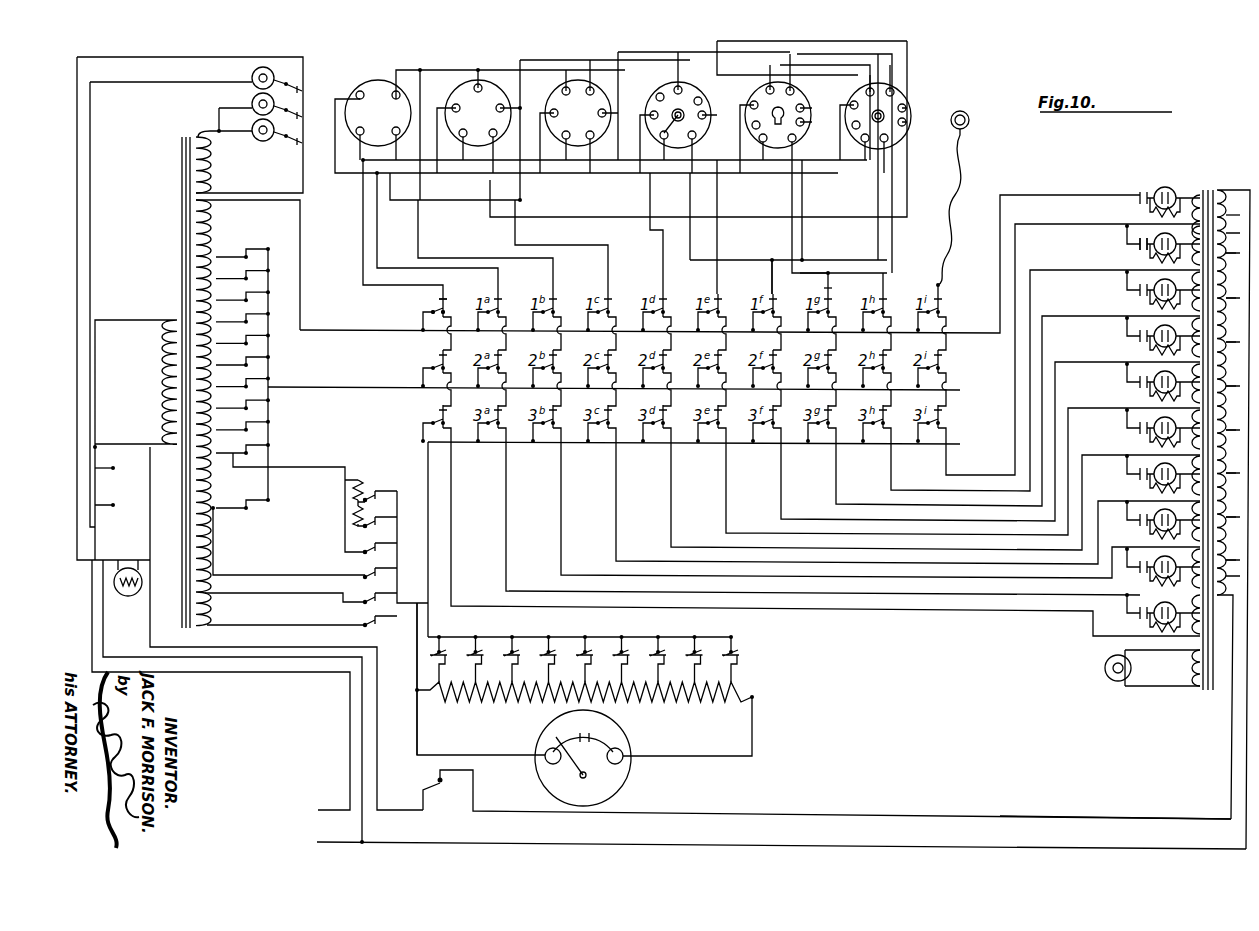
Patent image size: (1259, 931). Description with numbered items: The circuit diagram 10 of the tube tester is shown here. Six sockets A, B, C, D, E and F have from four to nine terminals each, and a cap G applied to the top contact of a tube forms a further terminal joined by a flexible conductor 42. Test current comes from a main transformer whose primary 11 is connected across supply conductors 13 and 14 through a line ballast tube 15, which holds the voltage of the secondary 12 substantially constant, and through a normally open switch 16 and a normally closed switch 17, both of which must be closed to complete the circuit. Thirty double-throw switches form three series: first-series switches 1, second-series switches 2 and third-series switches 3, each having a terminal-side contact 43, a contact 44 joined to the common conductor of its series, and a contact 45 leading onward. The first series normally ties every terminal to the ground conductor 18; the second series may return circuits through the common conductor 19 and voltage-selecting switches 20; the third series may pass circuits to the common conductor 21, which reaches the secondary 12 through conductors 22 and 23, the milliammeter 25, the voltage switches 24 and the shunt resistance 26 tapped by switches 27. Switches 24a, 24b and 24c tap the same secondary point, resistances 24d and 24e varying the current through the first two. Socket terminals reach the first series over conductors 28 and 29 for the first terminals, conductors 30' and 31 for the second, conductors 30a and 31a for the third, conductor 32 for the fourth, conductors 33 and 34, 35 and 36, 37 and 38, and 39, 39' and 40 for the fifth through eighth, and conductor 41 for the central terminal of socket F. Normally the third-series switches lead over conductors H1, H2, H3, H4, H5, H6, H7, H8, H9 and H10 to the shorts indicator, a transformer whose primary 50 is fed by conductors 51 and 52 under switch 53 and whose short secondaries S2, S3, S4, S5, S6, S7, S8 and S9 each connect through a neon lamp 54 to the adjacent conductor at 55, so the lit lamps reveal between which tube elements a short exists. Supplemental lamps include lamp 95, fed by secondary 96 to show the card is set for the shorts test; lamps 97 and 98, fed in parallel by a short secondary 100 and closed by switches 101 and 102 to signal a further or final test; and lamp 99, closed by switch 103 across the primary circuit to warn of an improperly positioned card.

The winding tap S10 10 is at (1241, 216).
The primary 11 is at (158, 369).
The secondary 12 is at (210, 242).
The supply conductor 13 is at (92, 578).
The supply conductor 14 is at (103, 603).
The line ballast tube 15 is at (126, 596).
The switch 16 is at (116, 468).
The switch 17 is at (116, 504).
The common conductor 18 is at (389, 333).
The common return conductor 19 is at (372, 386).
The switches 20 is at (262, 358).
The common conductor 21 is at (528, 445).
The conductor 22 is at (428, 458).
The conductor 23 is at (417, 668).
The switches 24 is at (367, 598).
The switch 24a is at (375, 496).
The switch 24b is at (380, 522).
The switch 24c is at (380, 548).
The resistance 24d is at (356, 478).
The resistance 24e is at (353, 522).
The milliammeter 25 is at (583, 758).
The resistance 26 is at (535, 702).
The switches 27 is at (658, 648).
The conductor 28 is at (338, 173).
The conductor 29 is at (362, 267).
The conductor 30a is at (459, 68).
The conductor 30' is at (456, 187).
The conductor 31 is at (393, 268).
The conductor 31a is at (461, 258).
The conductor 32 is at (568, 60).
The conductor 33 is at (655, 50).
The conductor 34 is at (650, 230).
The conductor 35 is at (908, 64).
The conductor 36 is at (700, 218).
The conductor 37 is at (745, 255).
The conductor 38 is at (772, 272).
The conductor 39 is at (838, 233).
The conductor 39' is at (811, 283).
The conductor 40 is at (829, 290).
The conductor 41 is at (878, 218).
The flexible conductor 42 is at (945, 195).
The stationary contact 43 is at (445, 302).
The stationary contact 44 is at (432, 314).
The stationary contact 45 is at (452, 314).
The primary 50 is at (1238, 519).
The conductor 51 is at (1038, 848).
The conductor 52 is at (1037, 818).
The switch 53 is at (437, 777).
The lamp 54 is at (1168, 187).
The connection 55 is at (1127, 234).
The lamp 95 is at (1105, 668).
The secondary 96 is at (1183, 668).
The lamp 97 is at (264, 143).
The lamp 98 is at (250, 103).
The lamp 99 is at (275, 76).
The short secondary 100 is at (212, 181).
The switch 101 is at (288, 136).
The switch 102 is at (288, 110).
The switch 103 is at (288, 84).
The first-series switch 1 is at (440, 305).
The second-series switch 2 is at (440, 359).
The third-series switch 3 is at (440, 414).
The socket A is at (378, 113).
The socket B is at (474, 121).
The socket C is at (579, 121).
The socket D is at (681, 127).
The socket E is at (776, 113).
The socket F is at (876, 119).
The cap G is at (959, 110).
The conductor H1 is at (462, 522).
The conductor H2 is at (519, 512).
The conductor H3 is at (573, 505).
The conductor H4 is at (627, 498).
The conductor H5 is at (683, 492).
The conductor H6 is at (738, 485).
The conductor H7 is at (793, 479).
The conductor H8 is at (848, 473).
The conductor H9 is at (903, 466).
The conductor H10 is at (958, 460).
The short secondary S2 is at (1239, 561).
The short secondary S3 is at (1239, 518).
The short secondary S4 is at (1239, 474).
The short secondary S5 is at (1239, 431).
The short secondary S6 is at (1239, 387).
The short secondary S7 is at (1239, 343).
The short secondary S8 is at (1239, 299).
The short secondary S9 is at (1239, 255).